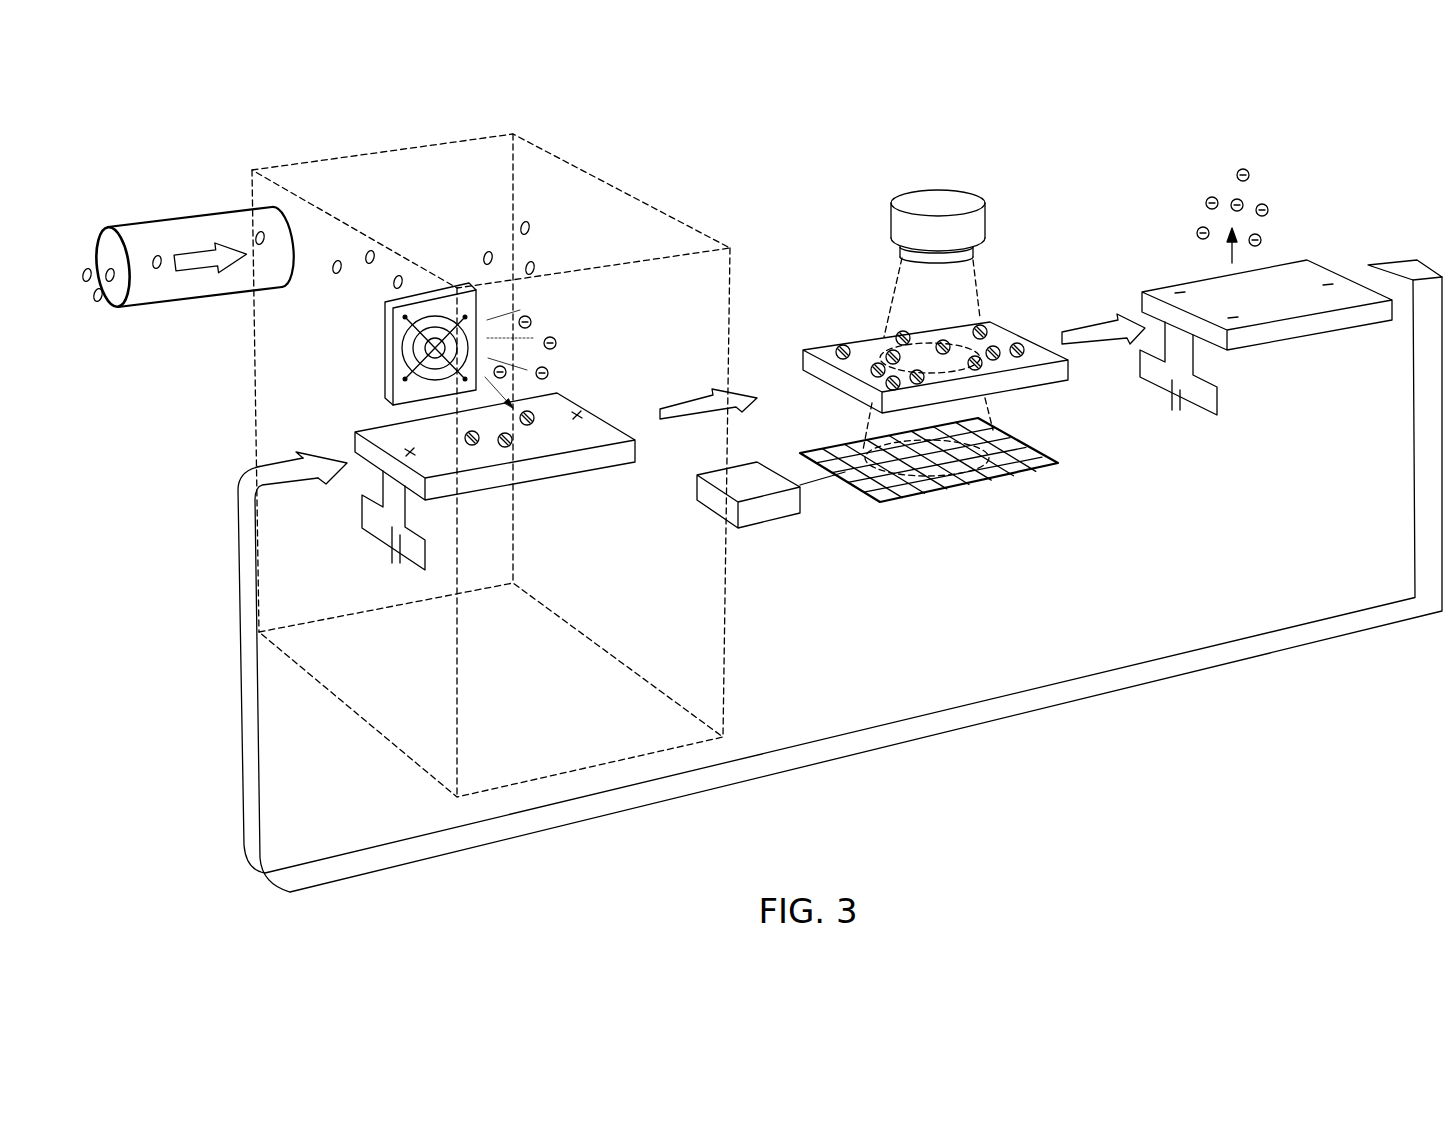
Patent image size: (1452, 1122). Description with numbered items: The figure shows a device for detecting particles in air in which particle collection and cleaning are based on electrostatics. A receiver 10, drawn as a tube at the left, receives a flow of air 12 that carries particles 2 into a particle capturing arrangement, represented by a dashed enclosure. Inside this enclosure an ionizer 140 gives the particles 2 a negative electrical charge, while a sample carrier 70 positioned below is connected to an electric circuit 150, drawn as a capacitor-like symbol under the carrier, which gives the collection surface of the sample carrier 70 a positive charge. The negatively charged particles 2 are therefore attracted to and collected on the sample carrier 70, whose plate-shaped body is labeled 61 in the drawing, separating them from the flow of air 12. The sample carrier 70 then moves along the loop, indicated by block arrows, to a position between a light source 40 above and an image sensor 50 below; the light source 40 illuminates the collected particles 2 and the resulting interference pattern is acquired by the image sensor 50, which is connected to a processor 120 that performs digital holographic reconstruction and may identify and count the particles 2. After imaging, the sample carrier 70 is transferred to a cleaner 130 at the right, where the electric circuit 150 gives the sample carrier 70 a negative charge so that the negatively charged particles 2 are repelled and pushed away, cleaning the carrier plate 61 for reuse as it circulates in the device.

The particles 2 is at (100, 302).
The receiver 10 is at (176, 222).
The flow of air 12 is at (203, 272).
The light source 40 is at (937, 203).
The image sensor 50 is at (1010, 500).
The substrate plate 61 is at (548, 466).
The sample carrier 70 is at (842, 415).
The processor 120 is at (762, 518).
The cleaner 130 is at (1332, 194).
The ionizer 140 is at (432, 297).
The electric circuit 150 is at (363, 513).